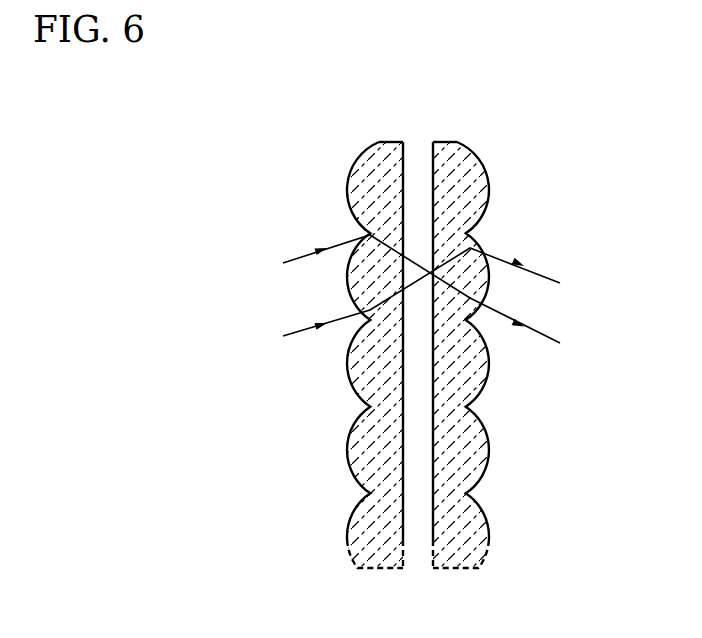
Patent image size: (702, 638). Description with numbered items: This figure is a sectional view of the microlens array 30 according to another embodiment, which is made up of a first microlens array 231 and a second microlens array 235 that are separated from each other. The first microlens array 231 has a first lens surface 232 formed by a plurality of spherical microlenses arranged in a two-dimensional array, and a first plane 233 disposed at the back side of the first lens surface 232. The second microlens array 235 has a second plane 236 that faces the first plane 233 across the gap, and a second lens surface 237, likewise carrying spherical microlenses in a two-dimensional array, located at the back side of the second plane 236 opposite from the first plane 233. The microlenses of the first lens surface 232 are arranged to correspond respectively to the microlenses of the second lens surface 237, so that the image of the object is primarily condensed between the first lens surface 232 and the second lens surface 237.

The microlens array 30 is at (541, 107).
The first microlens array 231 is at (410, 70).
The first lens surface 232 is at (345, 152).
The first plane 233 is at (409, 149).
The second microlens array 235 is at (506, 70).
The second plane 236 is at (428, 148).
The second lens surface 237 is at (493, 152).